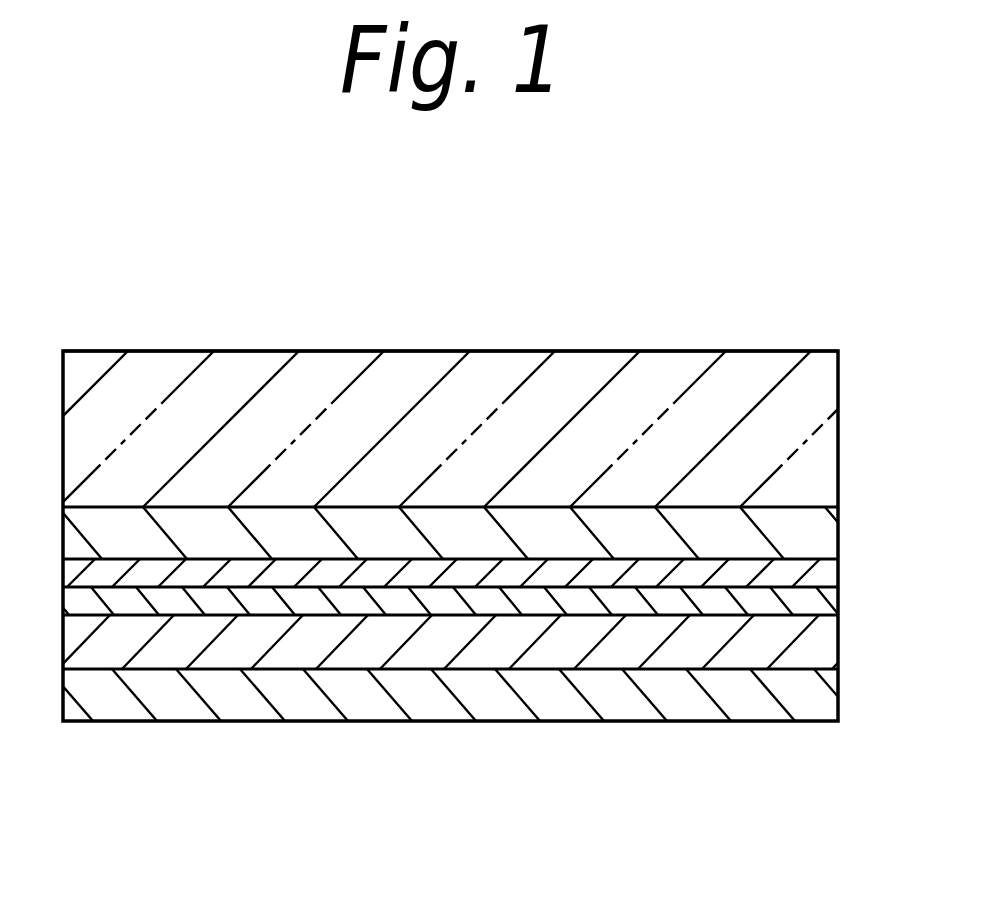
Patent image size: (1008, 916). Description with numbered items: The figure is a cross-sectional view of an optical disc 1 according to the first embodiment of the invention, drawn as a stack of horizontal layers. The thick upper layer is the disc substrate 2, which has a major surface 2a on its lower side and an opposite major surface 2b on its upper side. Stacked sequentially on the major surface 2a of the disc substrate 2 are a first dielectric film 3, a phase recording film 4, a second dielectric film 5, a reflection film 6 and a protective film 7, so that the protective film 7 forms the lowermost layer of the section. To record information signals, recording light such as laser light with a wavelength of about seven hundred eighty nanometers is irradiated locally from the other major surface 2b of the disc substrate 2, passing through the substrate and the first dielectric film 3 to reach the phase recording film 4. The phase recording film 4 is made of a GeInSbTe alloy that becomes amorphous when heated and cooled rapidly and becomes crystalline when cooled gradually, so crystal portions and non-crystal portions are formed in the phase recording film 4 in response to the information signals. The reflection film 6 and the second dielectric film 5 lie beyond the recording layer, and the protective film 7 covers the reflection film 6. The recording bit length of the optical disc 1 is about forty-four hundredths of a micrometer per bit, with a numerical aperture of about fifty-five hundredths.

The optical disc 1 is at (439, 748).
The disc substrate 2 is at (810, 404).
The major surface 2a is at (833, 506).
The other major surface 2b is at (768, 352).
The first dielectric film 3 is at (817, 549).
The phase recording film 4 is at (813, 578).
The second dielectric film 5 is at (720, 598).
The reflection film 6 is at (807, 650).
The protective film 7 is at (237, 695).